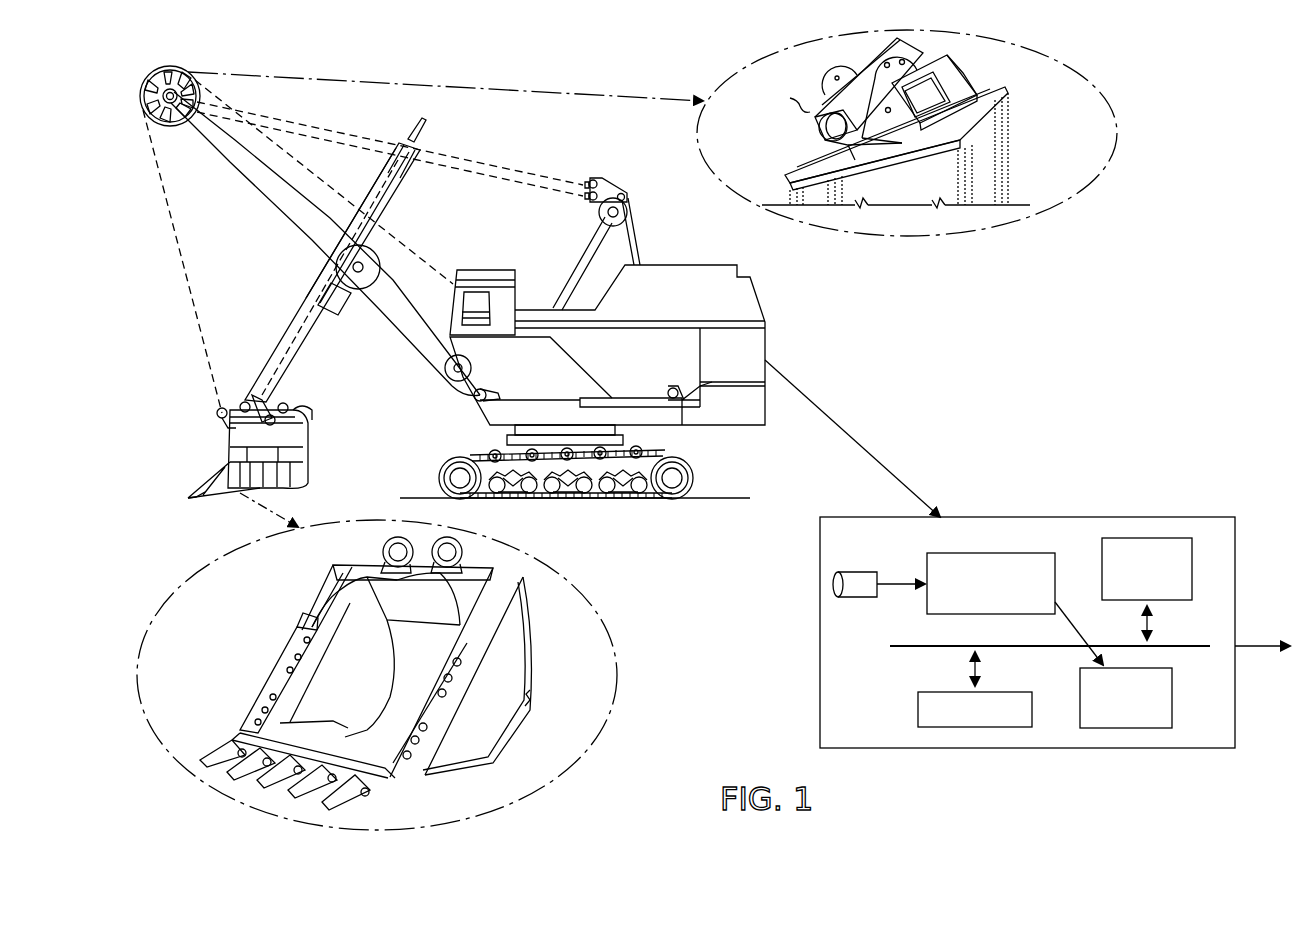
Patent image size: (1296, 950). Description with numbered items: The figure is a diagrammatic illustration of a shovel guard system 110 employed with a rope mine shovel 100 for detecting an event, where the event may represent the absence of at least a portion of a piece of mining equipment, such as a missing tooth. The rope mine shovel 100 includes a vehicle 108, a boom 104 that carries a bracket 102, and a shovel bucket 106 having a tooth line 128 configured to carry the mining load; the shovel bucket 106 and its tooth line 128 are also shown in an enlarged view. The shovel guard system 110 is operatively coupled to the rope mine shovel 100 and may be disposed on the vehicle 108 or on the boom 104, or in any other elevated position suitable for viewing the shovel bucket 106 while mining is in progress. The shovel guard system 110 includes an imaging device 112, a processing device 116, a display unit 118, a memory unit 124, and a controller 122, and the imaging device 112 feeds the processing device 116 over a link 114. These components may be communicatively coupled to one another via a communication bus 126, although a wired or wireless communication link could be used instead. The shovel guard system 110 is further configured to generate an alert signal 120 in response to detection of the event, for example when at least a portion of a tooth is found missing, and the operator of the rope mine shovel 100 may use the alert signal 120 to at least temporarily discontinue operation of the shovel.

The rope mine shovel 100 is at (793, 303).
The bracket 102 is at (816, 110).
The boom 104 is at (148, 72).
The shovel bucket 106 is at (298, 436).
The vehicle 108 is at (308, 332).
The shovel guard system 110 is at (970, 517).
The imaging device 112 is at (848, 572).
The sensor signal link 114 is at (893, 584).
The processing device 116 is at (1030, 552).
The display unit 118 is at (1126, 740).
The alert signal 120 is at (1275, 640).
The controller 122 is at (975, 740).
The memory unit 124 is at (1170, 538).
The communication bus 126 is at (926, 646).
The tooth line 128 is at (196, 488).